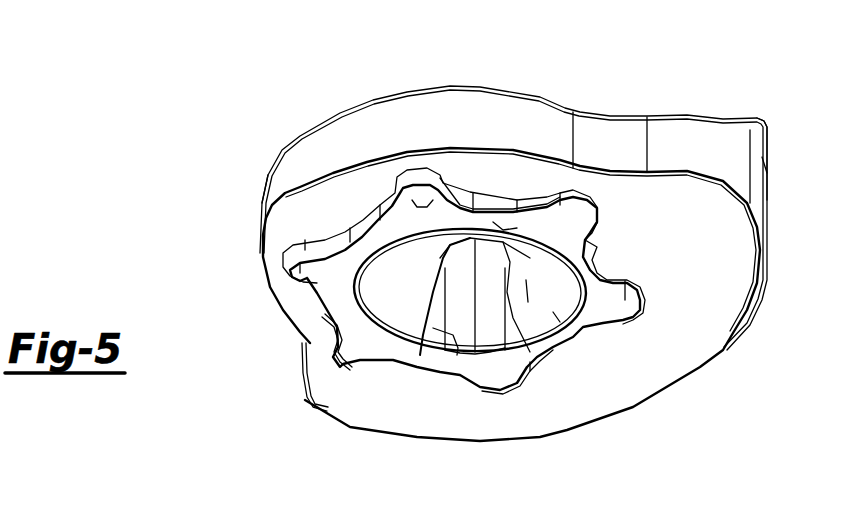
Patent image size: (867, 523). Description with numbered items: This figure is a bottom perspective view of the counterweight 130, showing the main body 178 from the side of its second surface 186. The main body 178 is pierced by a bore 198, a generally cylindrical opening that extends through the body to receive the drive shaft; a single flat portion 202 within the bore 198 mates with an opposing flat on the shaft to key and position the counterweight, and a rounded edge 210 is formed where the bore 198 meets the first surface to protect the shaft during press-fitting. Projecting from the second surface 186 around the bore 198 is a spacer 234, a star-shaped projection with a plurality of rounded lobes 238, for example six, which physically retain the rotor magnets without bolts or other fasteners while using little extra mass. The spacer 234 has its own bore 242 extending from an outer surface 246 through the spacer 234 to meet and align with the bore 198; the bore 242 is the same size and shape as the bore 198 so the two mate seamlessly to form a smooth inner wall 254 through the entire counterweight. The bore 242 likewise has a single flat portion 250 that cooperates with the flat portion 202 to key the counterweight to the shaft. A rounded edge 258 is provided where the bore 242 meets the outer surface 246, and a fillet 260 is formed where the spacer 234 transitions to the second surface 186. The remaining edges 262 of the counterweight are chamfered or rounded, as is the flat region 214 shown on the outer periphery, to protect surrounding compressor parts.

The upper counterweight 130 is at (641, 57).
The main body 178 is at (215, 184).
The second surface 186 is at (686, 384).
The bore 198 is at (380, 290).
The flat portion 202 is at (540, 353).
The rounded edge 210 is at (436, 322).
The flat 214 is at (795, 145).
The spacer 234 is at (222, 0).
The lobes 238 is at (420, 306).
The bore 242 is at (491, 334).
The outer surface 246 is at (495, 245).
The flat portion 250 is at (547, 362).
The inner wall 254 is at (436, 405).
The rounded edge 258 is at (577, 354).
The fillet 260 is at (656, 271).
The remaining edges 262 is at (505, 215).